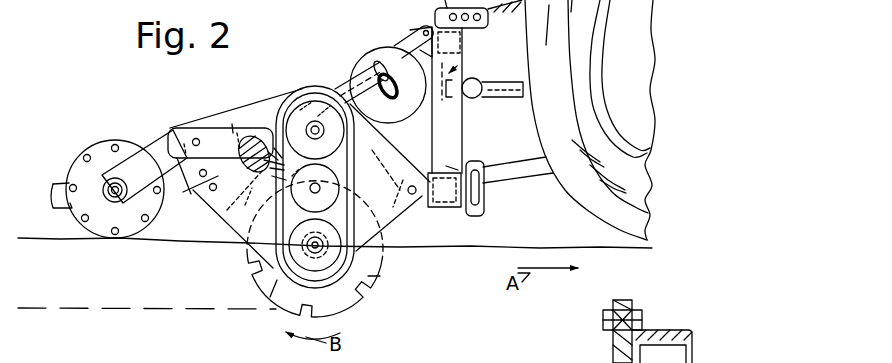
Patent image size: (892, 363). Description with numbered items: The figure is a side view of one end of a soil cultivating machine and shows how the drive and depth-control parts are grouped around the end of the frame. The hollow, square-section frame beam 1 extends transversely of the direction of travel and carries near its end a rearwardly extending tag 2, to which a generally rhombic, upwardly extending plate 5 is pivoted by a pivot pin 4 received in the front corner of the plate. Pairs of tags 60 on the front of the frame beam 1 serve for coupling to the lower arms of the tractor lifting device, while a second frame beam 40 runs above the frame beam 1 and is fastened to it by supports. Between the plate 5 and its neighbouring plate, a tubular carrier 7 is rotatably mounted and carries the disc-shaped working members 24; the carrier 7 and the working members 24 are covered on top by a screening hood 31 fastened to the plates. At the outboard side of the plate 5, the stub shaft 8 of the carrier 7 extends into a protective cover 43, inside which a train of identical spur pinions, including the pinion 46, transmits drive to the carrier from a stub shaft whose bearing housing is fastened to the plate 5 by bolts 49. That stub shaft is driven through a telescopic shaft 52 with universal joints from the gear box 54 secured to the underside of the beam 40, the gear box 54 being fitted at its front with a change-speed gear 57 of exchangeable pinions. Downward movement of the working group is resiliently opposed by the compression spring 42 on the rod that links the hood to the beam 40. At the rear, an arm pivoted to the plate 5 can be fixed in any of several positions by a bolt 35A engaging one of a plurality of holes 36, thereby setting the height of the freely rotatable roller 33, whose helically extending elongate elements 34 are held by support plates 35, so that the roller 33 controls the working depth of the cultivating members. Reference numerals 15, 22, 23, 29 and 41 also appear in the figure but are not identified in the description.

The frame beam 1 is at (452, 167).
The tags 2 is at (447, 212).
The pivot pins 4 is at (427, 166).
The plates 5 is at (252, 113).
The carrier 7 is at (238, 262).
The stub shaft 8 is at (330, 240).
The chain case 15 is at (290, 92).
The disc arm 22 is at (153, 134).
The rotary hoe wheel 23 is at (364, 298).
The disc-shaped working members 24 is at (252, 279).
The drive shaft 29 is at (337, 86).
The screening hood 31 is at (391, 181).
The roller 33 is at (98, 134).
The elongate elements 34 is at (58, 182).
The support plates 35 is at (88, 141).
The bolt 35A is at (193, 137).
The holes 36 is at (203, 192).
The frame beam 40 is at (467, 45).
The tie rod 41 is at (458, 128).
The compression spring 42 is at (240, 132).
The protective cover 43 is at (247, 227).
The pinion 46 is at (254, 183).
The bolts 49 is at (612, 338).
The telescopic shaft 52 is at (361, 72).
The gear box 54 is at (381, 49).
The change-speed gear 57 is at (470, 63).
The tags 60 is at (484, 209).